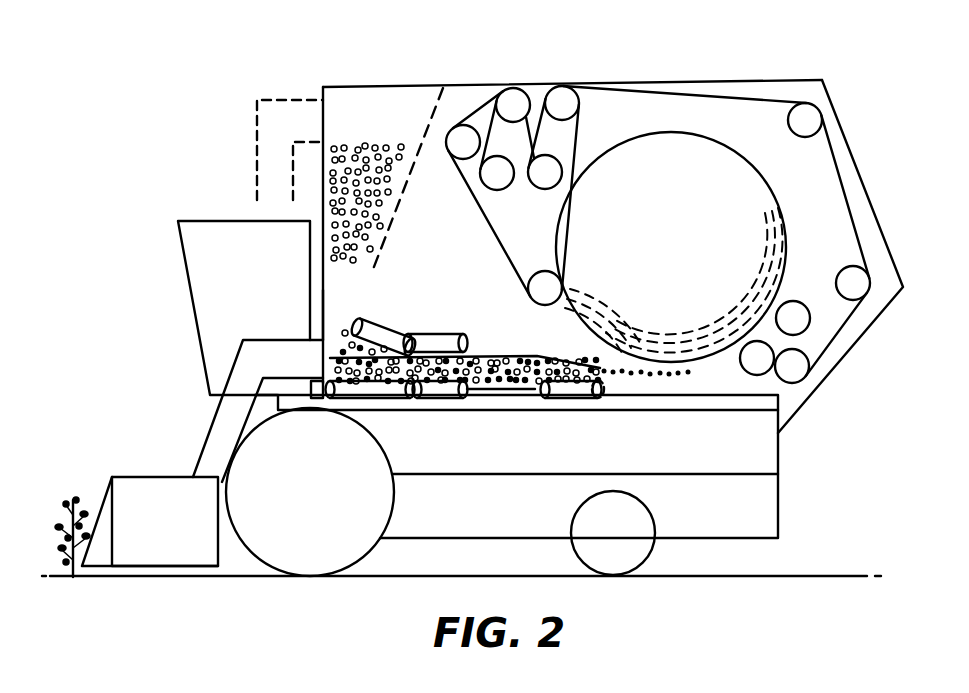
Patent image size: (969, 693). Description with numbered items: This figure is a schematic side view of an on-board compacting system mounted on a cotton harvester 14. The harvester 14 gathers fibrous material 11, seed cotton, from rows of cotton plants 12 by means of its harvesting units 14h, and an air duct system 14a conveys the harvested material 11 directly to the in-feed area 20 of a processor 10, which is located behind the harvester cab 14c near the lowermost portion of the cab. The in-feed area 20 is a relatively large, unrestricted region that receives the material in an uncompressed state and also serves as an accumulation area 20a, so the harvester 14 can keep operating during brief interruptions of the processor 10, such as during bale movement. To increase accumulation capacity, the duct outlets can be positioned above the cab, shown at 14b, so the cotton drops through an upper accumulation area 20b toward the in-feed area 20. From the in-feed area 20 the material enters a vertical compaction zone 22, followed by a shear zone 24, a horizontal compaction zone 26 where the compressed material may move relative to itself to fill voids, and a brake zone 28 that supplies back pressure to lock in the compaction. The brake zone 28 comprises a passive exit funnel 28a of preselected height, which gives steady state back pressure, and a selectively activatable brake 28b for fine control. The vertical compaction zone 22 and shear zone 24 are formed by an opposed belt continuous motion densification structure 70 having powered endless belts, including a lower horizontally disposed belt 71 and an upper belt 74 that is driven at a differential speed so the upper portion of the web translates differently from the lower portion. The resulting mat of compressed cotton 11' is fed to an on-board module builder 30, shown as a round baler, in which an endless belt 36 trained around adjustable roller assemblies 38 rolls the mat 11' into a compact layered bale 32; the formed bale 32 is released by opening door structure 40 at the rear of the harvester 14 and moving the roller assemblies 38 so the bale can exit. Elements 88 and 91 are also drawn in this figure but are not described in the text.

The processor 10 is at (446, 275).
The fibrous material 11 is at (338, 273).
The web of material 11' is at (673, 380).
The cotton plants 12 is at (72, 500).
The cotton harvester 14 is at (202, 312).
The air duct system 14a is at (217, 412).
The duct outlets above the cab 14b is at (303, 97).
The harvester cab 14c is at (203, 221).
The harvesting units 14h is at (180, 477).
The in-feed area 20 is at (362, 194).
The accumulation area 20a is at (340, 315).
The upper accumulation area 20b is at (398, 120).
The vertical compaction zone 22 is at (383, 314).
The shear zone 24 is at (437, 332).
The horizontal compaction zone 26 is at (502, 344).
The brake zone 28 is at (575, 347).
The passive exit funnel 28a is at (605, 367).
The selectively activatable brake 28b is at (598, 400).
The module builder 30 is at (613, 232).
The bale 32 is at (688, 249).
The endless belt 36 is at (470, 200).
The roller assemblies 38 is at (575, 139).
The door structure 40 is at (877, 196).
The opposed belt continuous motion densification structure 70 is at (502, 478).
The lower horizontally disposed belt 71 is at (372, 394).
The upper belt 74 is at (440, 394).
The pulley 88 is at (820, 288).
The conveyor roller 91 is at (570, 394).